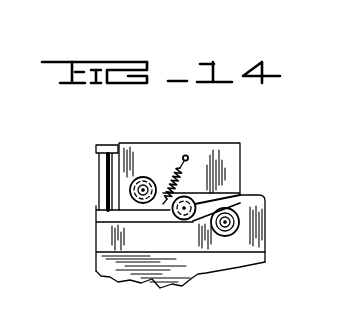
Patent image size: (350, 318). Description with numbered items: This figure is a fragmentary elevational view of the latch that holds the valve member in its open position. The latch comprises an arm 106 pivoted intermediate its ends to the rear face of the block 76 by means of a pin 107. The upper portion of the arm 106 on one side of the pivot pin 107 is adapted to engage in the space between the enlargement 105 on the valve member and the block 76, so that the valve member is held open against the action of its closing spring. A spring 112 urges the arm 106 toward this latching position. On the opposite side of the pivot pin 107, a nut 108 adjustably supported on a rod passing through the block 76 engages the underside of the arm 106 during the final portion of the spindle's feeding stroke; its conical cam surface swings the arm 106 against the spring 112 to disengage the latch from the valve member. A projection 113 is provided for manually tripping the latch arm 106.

The block 76 is at (231, 142).
The enlargement 105 is at (148, 178).
The arm 106 is at (221, 198).
The pin 107 is at (188, 220).
The nut 108 is at (242, 231).
The spring 112 is at (170, 163).
The projection 113 is at (101, 171).